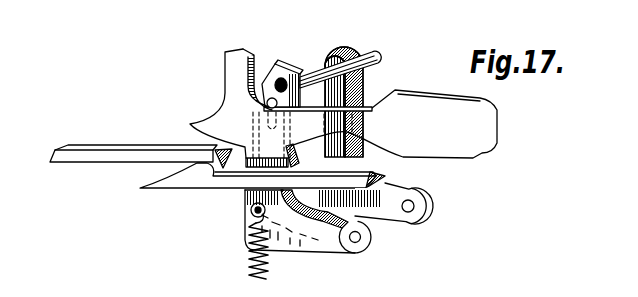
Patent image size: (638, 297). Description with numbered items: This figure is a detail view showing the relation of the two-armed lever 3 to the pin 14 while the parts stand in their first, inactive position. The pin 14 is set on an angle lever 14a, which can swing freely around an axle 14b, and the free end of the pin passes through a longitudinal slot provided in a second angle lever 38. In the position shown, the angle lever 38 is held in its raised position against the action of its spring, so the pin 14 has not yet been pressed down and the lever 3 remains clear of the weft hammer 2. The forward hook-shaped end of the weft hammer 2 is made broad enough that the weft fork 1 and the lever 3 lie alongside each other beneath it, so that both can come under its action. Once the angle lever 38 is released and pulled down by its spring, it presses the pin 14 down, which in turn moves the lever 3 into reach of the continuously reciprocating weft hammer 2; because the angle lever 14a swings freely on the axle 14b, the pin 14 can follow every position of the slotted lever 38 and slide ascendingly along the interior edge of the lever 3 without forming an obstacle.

The weft fork 1 is at (111, 155).
The weft hammer 2 is at (177, 182).
The two-armed lever 3 is at (232, 93).
The pin 14 is at (319, 76).
The angle lever 14a is at (363, 78).
The axle 14b is at (414, 206).
The angle lever 38 is at (318, 228).